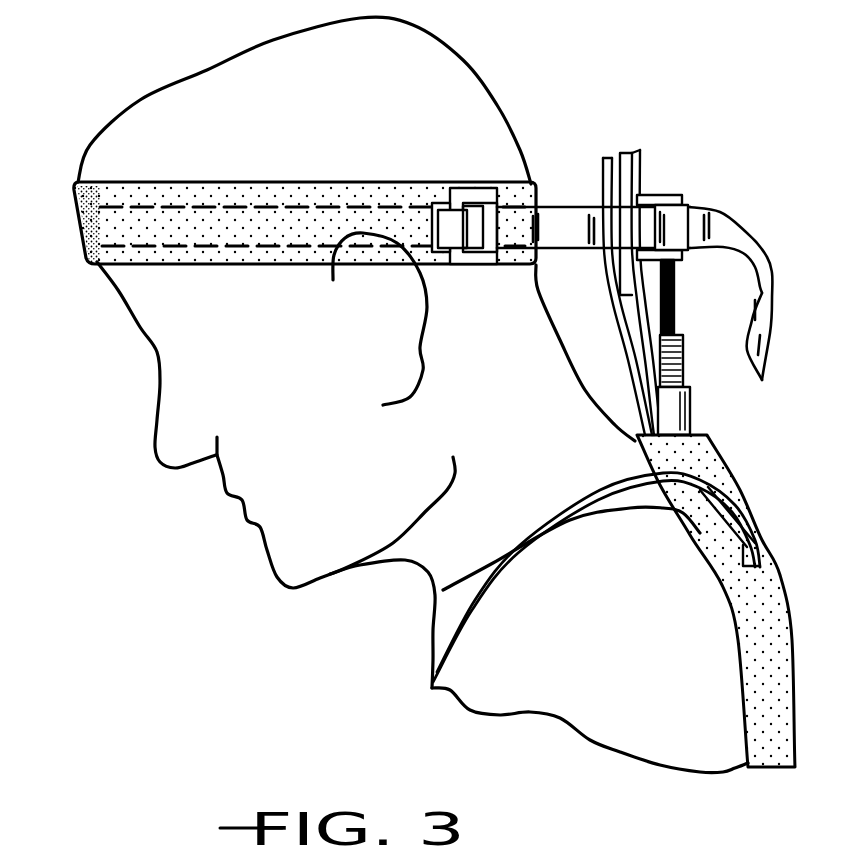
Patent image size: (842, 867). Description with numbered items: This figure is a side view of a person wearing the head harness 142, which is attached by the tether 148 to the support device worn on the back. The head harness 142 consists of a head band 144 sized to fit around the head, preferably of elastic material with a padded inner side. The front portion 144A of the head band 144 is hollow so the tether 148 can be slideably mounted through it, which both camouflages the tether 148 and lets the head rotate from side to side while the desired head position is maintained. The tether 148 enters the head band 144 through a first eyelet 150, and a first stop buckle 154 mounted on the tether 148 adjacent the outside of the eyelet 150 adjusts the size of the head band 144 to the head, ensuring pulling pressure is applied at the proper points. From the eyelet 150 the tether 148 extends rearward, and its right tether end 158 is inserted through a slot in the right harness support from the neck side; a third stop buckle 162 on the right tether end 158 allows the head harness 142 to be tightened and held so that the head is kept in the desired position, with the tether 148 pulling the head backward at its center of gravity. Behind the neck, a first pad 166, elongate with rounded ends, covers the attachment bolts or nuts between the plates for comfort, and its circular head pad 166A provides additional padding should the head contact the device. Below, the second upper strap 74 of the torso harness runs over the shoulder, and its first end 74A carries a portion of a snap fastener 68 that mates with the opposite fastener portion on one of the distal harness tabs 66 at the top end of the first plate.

The head harness 142 is at (160, 183).
The head band 144 is at (138, 263).
The front portion of the head band 144A is at (93, 228).
The first eyelet 150 is at (438, 203).
The first stop buckle 154 is at (483, 213).
The tether 148 is at (560, 224).
The right tether end 158 is at (738, 233).
The third stop buckle 162 is at (673, 213).
The first pad 166 is at (627, 343).
The head pad 166A is at (603, 252).
The second upper strap 74 is at (710, 457).
The first end of the second upper strap 74A is at (735, 487).
The fastener 68 is at (732, 520).
The distal harness tabs 66 is at (760, 550).